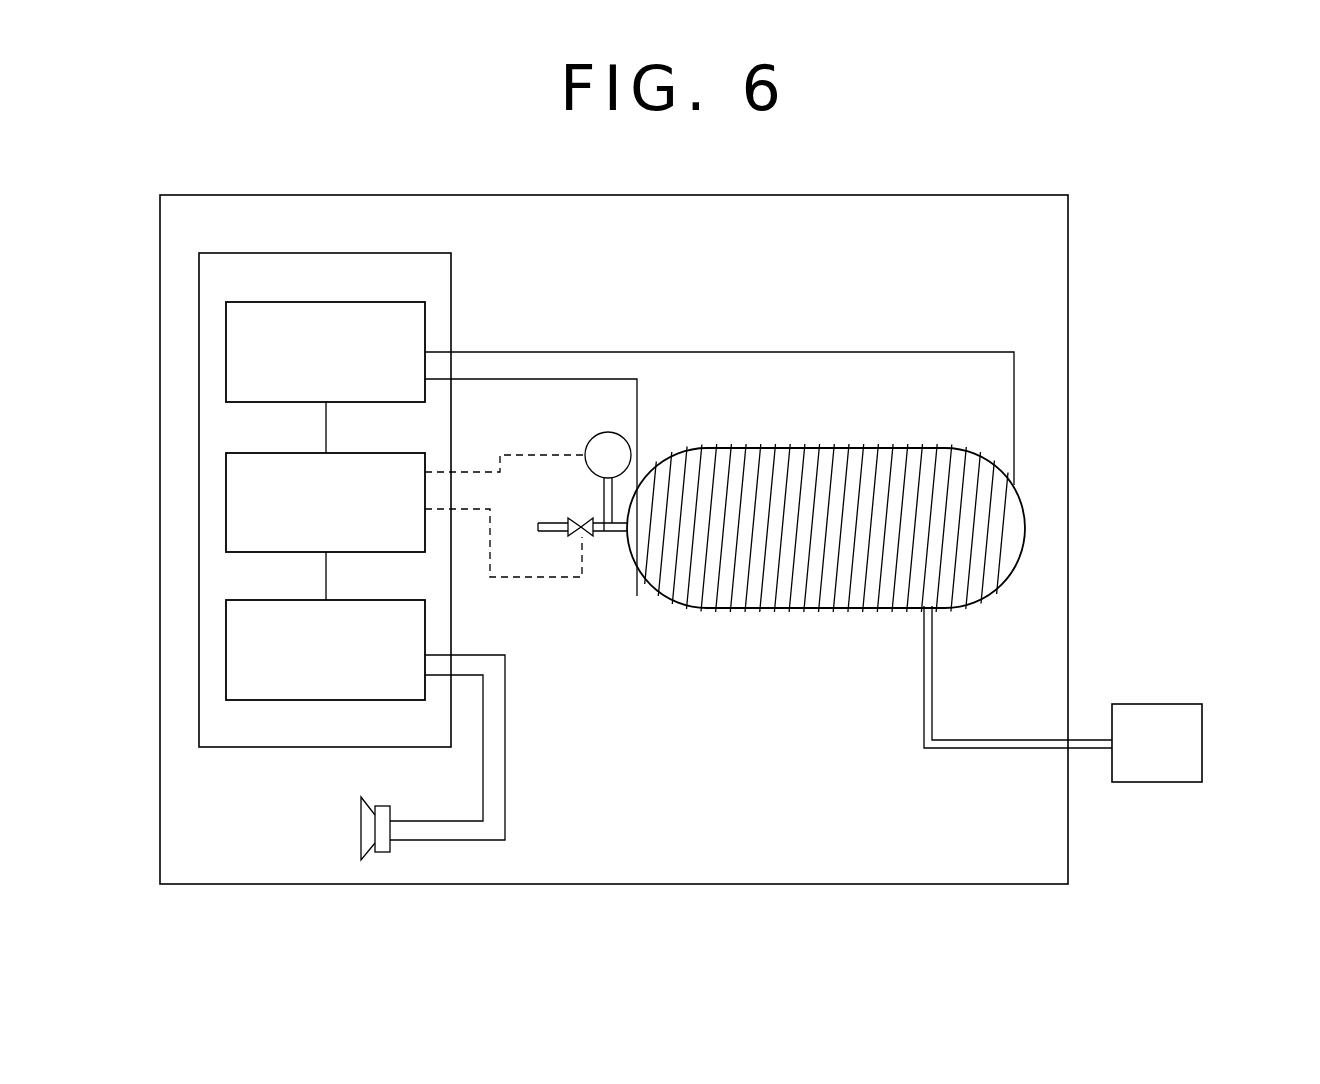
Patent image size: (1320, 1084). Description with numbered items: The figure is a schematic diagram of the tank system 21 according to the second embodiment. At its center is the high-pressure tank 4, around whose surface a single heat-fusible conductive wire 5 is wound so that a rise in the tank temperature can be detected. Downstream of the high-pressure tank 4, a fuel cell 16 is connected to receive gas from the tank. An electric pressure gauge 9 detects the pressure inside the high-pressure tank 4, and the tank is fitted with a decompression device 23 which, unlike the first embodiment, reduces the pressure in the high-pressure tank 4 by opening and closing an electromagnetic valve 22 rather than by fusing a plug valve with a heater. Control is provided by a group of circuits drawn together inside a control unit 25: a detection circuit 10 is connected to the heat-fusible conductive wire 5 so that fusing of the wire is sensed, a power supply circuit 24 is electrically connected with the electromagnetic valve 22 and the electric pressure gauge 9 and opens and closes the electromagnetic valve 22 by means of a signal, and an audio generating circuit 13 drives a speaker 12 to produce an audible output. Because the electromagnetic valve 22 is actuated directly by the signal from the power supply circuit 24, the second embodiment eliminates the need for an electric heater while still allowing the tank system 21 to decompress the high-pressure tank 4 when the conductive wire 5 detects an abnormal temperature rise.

The high-pressure tank 4 is at (1024, 549).
The heat-fusible conductive wire 5 is at (1003, 588).
The electric pressure gauge 9 is at (591, 447).
The detection circuit 10 is at (388, 301).
The speaker 12 is at (396, 806).
The audio generating circuit 13 is at (388, 599).
The fuel cell 16 is at (1202, 730).
The tank system 21 is at (1068, 822).
The electromagnetic valve 22 is at (573, 518).
The decompression device 23 is at (594, 556).
The power supply circuit 24 is at (388, 452).
The control unit 25 is at (445, 252).